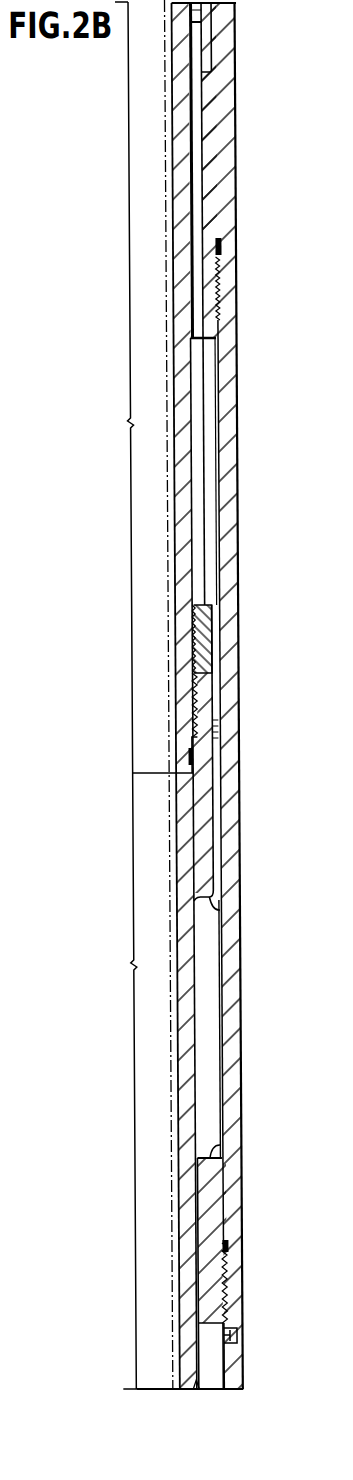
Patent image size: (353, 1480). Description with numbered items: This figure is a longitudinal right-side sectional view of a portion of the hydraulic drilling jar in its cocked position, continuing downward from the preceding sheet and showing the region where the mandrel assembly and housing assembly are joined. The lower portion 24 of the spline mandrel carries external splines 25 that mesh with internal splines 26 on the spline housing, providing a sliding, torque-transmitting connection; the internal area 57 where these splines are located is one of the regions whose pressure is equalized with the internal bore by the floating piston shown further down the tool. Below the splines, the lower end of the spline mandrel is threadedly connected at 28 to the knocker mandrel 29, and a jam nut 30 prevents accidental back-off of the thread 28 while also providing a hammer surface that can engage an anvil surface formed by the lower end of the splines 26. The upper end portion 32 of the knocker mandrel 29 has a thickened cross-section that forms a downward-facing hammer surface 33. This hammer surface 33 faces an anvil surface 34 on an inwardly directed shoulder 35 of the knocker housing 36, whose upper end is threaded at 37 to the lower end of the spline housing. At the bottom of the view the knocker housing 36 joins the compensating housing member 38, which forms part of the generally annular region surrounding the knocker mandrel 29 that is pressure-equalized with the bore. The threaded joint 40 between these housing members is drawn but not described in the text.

The lower portion of the spline mandrel 24 is at (186, 31).
The external splines 25 is at (192, 70).
The internal splines 26 is at (204, 180).
The threaded connection 28 is at (188, 710).
The knocker mandrel 29 is at (189, 990).
The jam nut 30 is at (203, 638).
The upper end portion of the knocker mandrel 32 is at (192, 818).
The hammer surface 33 is at (214, 913).
The anvil surface 34 is at (213, 1147).
The inwardly directed shoulder 35 is at (218, 1202).
The knocker housing 36 is at (235, 498).
The threaded connection of the knocker housing 37 is at (220, 300).
The compensating housing member 38 is at (227, 1378).
The threaded connection 40 is at (230, 1288).
The internal area 57 is at (212, 410).